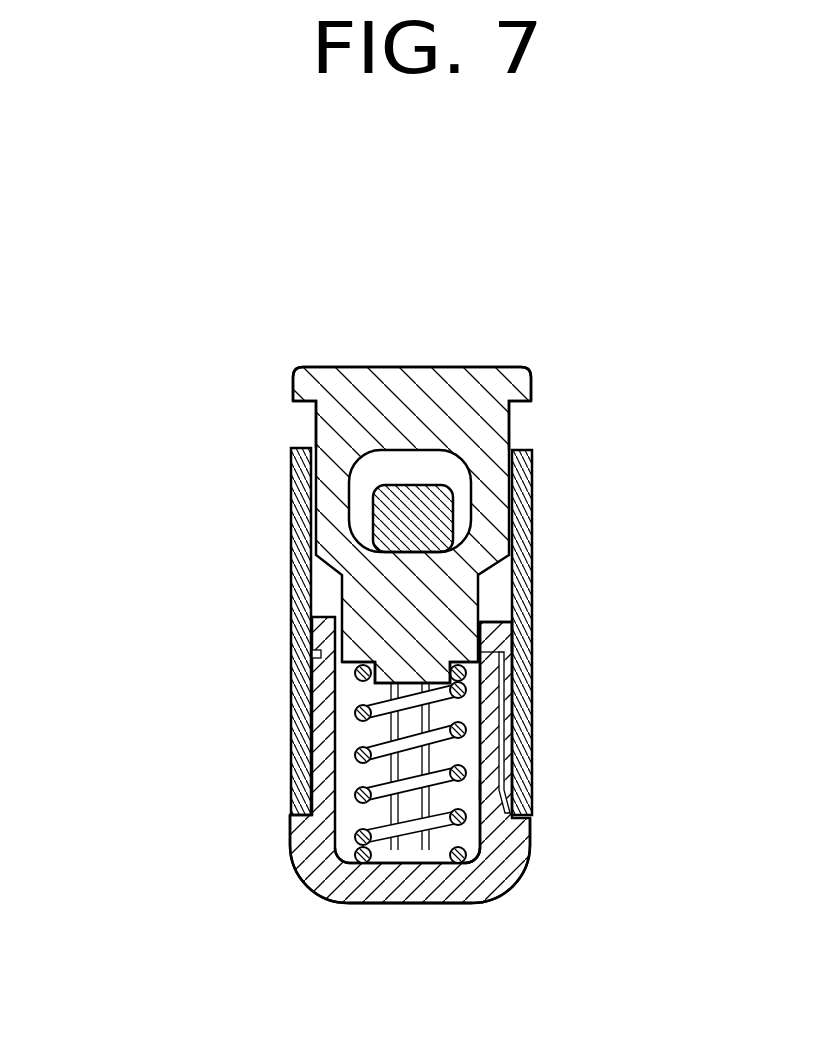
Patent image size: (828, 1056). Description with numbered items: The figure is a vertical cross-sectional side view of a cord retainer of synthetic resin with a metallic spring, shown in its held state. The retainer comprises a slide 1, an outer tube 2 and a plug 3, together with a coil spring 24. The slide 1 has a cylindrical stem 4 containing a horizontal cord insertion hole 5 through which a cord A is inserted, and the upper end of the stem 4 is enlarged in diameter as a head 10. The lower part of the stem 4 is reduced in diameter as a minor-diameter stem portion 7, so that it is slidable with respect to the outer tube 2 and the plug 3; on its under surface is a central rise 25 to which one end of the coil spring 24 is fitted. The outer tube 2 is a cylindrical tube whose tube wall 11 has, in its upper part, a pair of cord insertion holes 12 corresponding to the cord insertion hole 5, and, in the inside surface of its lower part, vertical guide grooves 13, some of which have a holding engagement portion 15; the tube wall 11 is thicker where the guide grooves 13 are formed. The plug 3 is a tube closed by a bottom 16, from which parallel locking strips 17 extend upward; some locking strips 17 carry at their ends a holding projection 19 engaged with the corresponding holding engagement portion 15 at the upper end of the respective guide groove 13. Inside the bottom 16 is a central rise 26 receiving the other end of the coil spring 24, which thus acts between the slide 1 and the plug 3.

The slide 1 is at (435, 352).
The outer tube 2 is at (262, 676).
The plug 3 is at (266, 871).
The cylindrical stem 4 is at (512, 423).
The cord insertion hole 5 is at (418, 465).
The minor-diameter stem portion 7 is at (335, 568).
The head 10 is at (360, 395).
The tube wall 11 is at (304, 492).
The cord insertion holes 12 is at (463, 500).
The guide grooves 13 is at (510, 788).
The holding engagement portion 15 is at (520, 680).
The bottom 16 is at (492, 884).
The locking strips 17 is at (300, 765).
The holding projection 19 is at (520, 634).
The coil spring 24 is at (378, 741).
The central rise 25 is at (408, 678).
The central rise 26 is at (400, 864).
The cord A is at (398, 517).